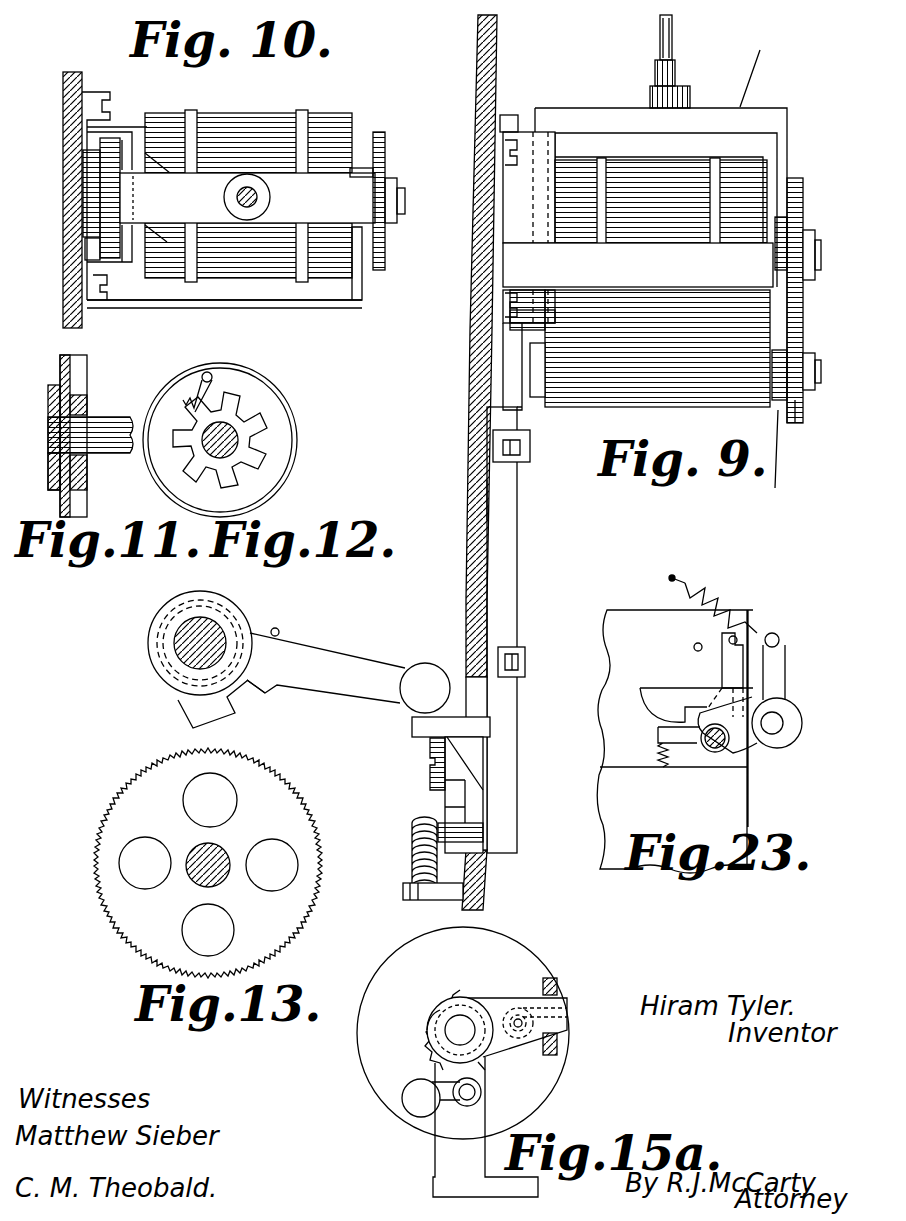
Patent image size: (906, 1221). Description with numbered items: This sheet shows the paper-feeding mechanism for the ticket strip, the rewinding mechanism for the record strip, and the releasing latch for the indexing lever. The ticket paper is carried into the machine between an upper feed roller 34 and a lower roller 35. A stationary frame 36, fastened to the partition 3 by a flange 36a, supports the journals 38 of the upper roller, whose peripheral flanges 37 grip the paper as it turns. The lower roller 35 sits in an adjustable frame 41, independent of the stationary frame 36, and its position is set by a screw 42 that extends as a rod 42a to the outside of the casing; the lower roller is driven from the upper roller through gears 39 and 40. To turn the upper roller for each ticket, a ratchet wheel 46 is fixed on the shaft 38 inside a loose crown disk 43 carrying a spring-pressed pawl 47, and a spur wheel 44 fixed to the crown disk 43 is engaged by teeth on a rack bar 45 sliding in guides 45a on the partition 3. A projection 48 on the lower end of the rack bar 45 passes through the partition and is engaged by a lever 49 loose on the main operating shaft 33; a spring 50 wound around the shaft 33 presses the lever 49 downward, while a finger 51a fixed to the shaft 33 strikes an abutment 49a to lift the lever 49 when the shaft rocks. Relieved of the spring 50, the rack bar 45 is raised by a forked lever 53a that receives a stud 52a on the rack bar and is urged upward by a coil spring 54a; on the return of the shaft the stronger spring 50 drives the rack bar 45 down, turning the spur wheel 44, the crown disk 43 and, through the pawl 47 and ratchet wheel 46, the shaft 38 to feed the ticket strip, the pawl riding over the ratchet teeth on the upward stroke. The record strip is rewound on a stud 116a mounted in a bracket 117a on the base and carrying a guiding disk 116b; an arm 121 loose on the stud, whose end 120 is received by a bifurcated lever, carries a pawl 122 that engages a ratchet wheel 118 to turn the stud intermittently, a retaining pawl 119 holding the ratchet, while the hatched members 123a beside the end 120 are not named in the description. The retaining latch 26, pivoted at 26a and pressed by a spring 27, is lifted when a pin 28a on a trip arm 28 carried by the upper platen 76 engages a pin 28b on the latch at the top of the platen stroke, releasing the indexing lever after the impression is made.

In FIG. 10, the partition 3 is at (63, 146).
In FIG. 9, the partition 3 is at (470, 385).
In FIG. 23, the retaining latch 26 is at (657, 703).
In FIG. 23, the pivot 26a is at (772, 728).
In FIG. 23, the spring 27 is at (715, 685).
In FIG. 23, the trip arm 28 is at (722, 670).
In FIG. 23, the pin 28a is at (737, 658).
In FIG. 23, the pin 28b is at (787, 687).
In FIG. 9, the main operating shaft 33 is at (190, 650).
In FIG. 10, the upper feed roller 34 is at (238, 118).
In FIG. 9, the upper feed roller 34 is at (670, 190).
In FIG. 9, the lower feed roller 35 is at (650, 408).
In FIG. 9, the stationary frame 36 is at (740, 150).
In FIG. 10, the flange 36a is at (92, 92).
In FIG. 9, the flange 36a is at (500, 215).
In FIG. 10, the peripheral flanges 37 is at (191, 118).
In FIG. 9, the peripheral flanges 37 is at (600, 160).
In FIG. 13, the peripheral flanges 37 is at (295, 805).
In FIG. 10, the shaft 38 is at (400, 198).
In FIG. 9, the shaft 38 is at (815, 235).
In FIG. 11, the shaft 38 is at (108, 418).
In FIG. 12, the shaft 38 is at (240, 432).
In FIG. 13, the shaft 38 is at (216, 858).
In FIG. 10, the gear 39 is at (386, 153).
In FIG. 9, the gear 39 is at (795, 178).
In FIG. 9, the gear 40 is at (795, 430).
In FIG. 10, the adjustable frame 41 is at (247, 195).
In FIG. 9, the adjustable frame 41 is at (771, 267).
In FIG. 10, the screw 42 is at (270, 198).
In FIG. 9, the screw 42 is at (650, 80).
In FIG. 9, the rod 42a is at (672, 42).
In FIG. 10, the crown disk 43 is at (110, 142).
In FIG. 11, the crown disk 43 is at (82, 355).
In FIG. 12, the crown disk 43 is at (277, 381).
In FIG. 10, the spur wheel 44 is at (90, 200).
In FIG. 11, the spur wheel 44 is at (55, 388).
In FIG. 10, the rack bar 45 is at (92, 247).
In FIG. 9, the rack bar 45 is at (480, 490).
In FIG. 9, the guides 45a is at (530, 450).
In FIG. 11, the ratchet wheel 46 is at (87, 472).
In FIG. 12, the ratchet wheel 46 is at (232, 412).
In FIG. 12, the spring-pressed pawl 47 is at (200, 385).
In FIG. 10, the projection 48 is at (330, 308).
In FIG. 9, the projection 48 is at (455, 728).
In FIG. 9, the lever arm 49 is at (378, 668).
In FIG. 9, the abutment 49a is at (270, 680).
In FIG. 9, the spring 50 is at (279, 632).
In FIG. 9, the finger 51a is at (235, 715).
In FIG. 9, the stud 52a is at (480, 835).
In FIG. 9, the lever 53a is at (440, 815).
In FIG. 9, the coil spring 54a is at (412, 870).
In FIG. 23, the upper platen 76 is at (675, 741).
In FIG. 15A, the rewinding stud 116a is at (460, 1030).
In FIG. 15A, the disk 116b is at (377, 1063).
In FIG. 15A, the bracket 117a is at (445, 1160).
In FIG. 15A, the ratchet wheel 118 is at (432, 1017).
In FIG. 15A, the retaining pawl 119 is at (415, 1105).
In FIG. 15A, the end of arm 120 is at (570, 1008).
In FIG. 15A, the arm 121 is at (520, 1035).
In FIG. 15A, the pawl 122 is at (495, 1010).
In FIG. 15A, the clamp 123a is at (555, 985).